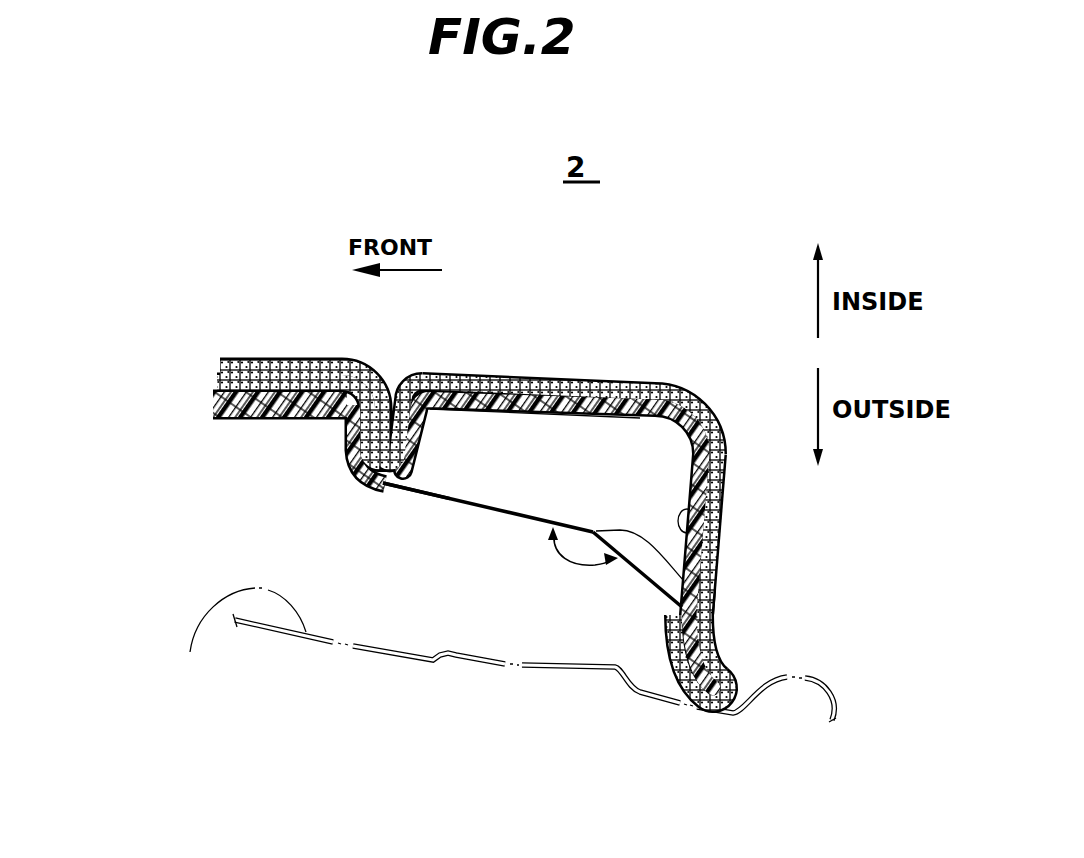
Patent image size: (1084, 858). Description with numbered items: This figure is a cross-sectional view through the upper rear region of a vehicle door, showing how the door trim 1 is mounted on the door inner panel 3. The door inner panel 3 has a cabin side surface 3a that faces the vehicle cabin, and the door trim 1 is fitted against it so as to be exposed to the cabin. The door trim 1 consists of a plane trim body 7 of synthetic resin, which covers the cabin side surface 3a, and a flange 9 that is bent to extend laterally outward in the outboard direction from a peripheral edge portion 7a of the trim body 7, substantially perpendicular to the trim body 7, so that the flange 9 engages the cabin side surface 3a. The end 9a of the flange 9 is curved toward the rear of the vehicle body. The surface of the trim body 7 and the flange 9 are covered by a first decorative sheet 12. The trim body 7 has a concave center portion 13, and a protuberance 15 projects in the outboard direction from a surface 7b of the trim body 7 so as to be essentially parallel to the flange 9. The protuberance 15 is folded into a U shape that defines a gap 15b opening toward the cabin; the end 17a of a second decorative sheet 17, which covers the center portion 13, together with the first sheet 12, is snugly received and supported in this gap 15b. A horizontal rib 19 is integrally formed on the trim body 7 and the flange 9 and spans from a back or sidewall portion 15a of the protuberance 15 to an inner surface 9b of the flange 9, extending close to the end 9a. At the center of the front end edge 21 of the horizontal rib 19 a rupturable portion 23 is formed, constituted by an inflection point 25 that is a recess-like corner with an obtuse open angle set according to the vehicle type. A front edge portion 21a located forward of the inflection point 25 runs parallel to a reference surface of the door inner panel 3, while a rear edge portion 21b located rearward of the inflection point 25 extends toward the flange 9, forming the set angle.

The door trim 1 is at (506, 330).
The door inner panel 3 is at (486, 672).
The cabin side surface 3a is at (238, 638).
The trim body 7 is at (650, 400).
The peripheral edge portion 7a is at (716, 383).
The surface of the trim body 7b is at (217, 452).
The flange 9 is at (716, 553).
The end of the flange 9a is at (702, 712).
The inner surface of the flange 9b is at (716, 518).
The first decorative sheet 12 is at (572, 378).
The center portion 13 is at (241, 345).
The protuberance 15 is at (350, 448).
The sidewall portion of the protuberance 15a is at (365, 478).
The gap 15b is at (403, 385).
The second decorative sheet 17 is at (280, 365).
The end of the second decorative sheet 17a is at (366, 480).
The horizontal rib 19 is at (508, 468).
The front end edge 21 is at (455, 502).
The front edge portion 21a is at (417, 492).
The rear edge portion 21b is at (640, 574).
The rupturable portion 23 is at (557, 576).
The inflection point 25 is at (708, 595).